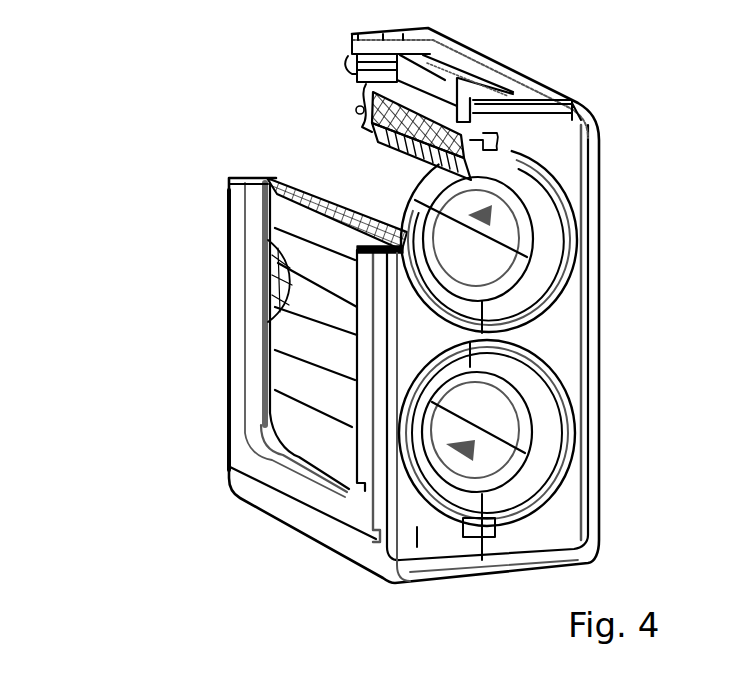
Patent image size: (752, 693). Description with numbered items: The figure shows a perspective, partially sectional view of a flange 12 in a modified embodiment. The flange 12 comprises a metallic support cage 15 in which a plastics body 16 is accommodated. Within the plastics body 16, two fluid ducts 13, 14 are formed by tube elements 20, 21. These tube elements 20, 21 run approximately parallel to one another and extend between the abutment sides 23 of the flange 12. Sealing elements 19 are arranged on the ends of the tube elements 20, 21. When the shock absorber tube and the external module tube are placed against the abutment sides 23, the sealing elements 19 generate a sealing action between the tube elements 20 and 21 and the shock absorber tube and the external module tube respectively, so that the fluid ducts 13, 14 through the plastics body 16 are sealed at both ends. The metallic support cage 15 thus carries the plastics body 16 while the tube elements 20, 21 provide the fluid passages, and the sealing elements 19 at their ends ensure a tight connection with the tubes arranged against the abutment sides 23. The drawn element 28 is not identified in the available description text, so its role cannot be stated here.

The flange 12 is at (116, 92).
The fluid duct 13 is at (497, 227).
The fluid duct 14 is at (520, 484).
The metallic support cage 15 is at (530, 103).
The plastics body 16 is at (358, 98).
The sealing elements 19 is at (366, 109).
The tube element 20 is at (375, 133).
The tube element 21 is at (492, 412).
The abutment sides 23 is at (553, 526).
The housing 28 is at (214, 336).